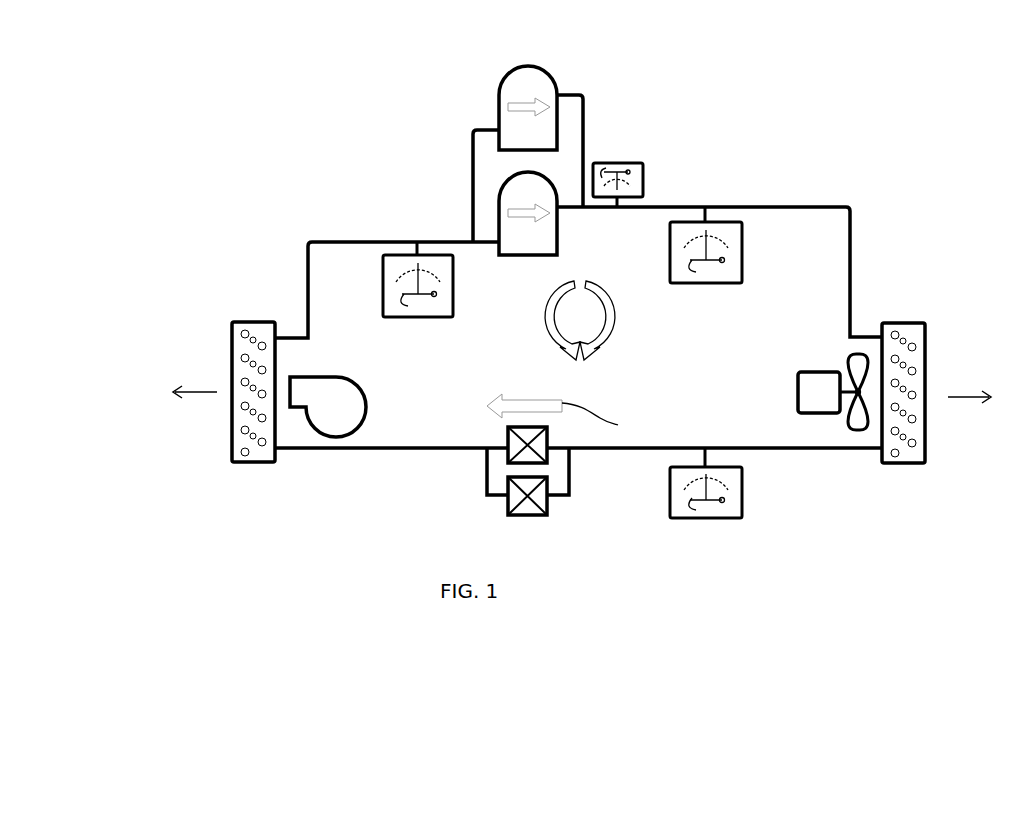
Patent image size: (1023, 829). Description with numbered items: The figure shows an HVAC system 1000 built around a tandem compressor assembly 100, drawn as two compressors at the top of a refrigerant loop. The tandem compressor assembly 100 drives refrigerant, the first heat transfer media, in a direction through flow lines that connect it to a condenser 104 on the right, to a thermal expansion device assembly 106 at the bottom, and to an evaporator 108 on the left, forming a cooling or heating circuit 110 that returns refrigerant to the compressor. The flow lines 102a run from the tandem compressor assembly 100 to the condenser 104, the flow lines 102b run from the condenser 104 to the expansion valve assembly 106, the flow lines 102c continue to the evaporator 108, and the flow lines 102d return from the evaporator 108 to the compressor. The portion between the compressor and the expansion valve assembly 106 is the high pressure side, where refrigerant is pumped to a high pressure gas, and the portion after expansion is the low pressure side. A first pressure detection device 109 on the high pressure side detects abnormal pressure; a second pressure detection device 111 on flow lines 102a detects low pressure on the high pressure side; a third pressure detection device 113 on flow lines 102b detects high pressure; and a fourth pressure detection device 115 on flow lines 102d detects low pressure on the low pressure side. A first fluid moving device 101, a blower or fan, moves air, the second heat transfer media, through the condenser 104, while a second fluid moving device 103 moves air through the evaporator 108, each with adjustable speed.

The HVAC system 1000 is at (902, 144).
The tandem compressor assembly 100 is at (470, 103).
The first fluid moving device 101 is at (797, 391).
The flow lines 102a is at (852, 238).
The flow lines 102b is at (862, 452).
The flow lines 102c is at (390, 450).
The flow lines 102d is at (308, 295).
The second fluid moving device 103 is at (365, 415).
The condenser 104 is at (900, 321).
The thermal expansion device assembly 106 is at (572, 512).
The evaporator 108 is at (230, 420).
The first pressure detection device 109 is at (630, 163).
The cooling or heating circuit 110 is at (564, 328).
The second pressure detection device 111 is at (712, 285).
The third pressure detection device 113 is at (718, 520).
The fourth pressure detection device 115 is at (445, 320).